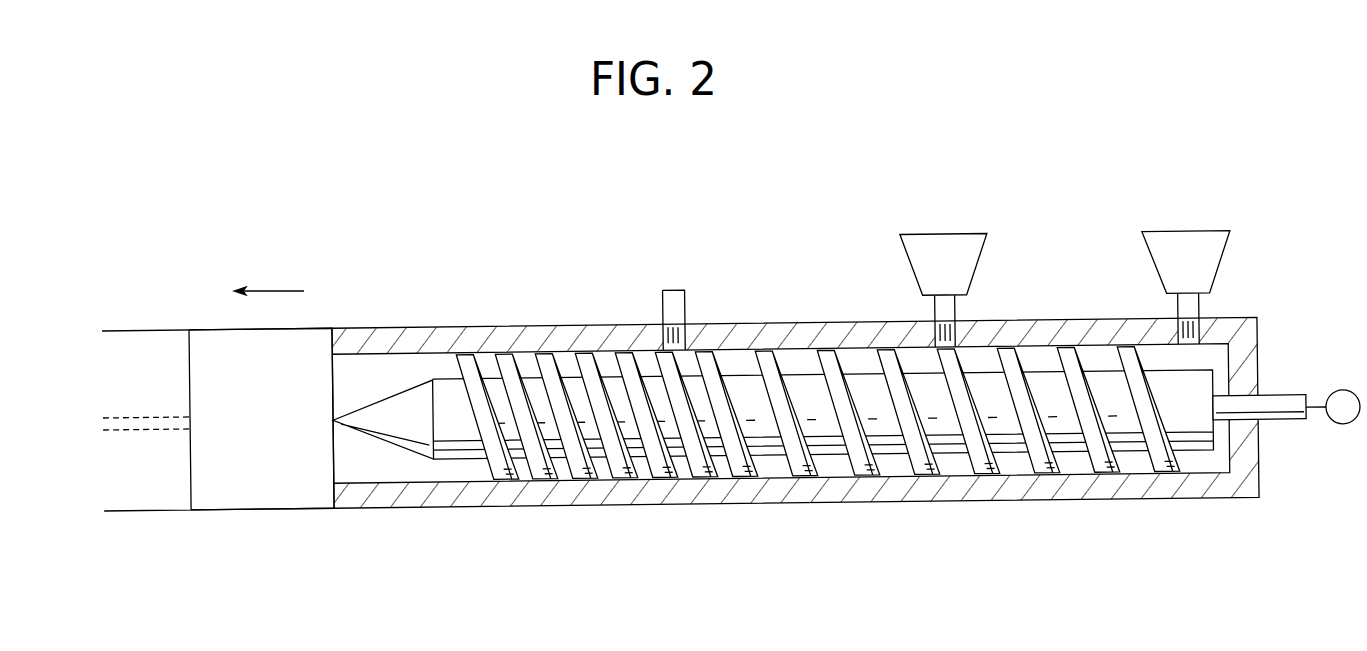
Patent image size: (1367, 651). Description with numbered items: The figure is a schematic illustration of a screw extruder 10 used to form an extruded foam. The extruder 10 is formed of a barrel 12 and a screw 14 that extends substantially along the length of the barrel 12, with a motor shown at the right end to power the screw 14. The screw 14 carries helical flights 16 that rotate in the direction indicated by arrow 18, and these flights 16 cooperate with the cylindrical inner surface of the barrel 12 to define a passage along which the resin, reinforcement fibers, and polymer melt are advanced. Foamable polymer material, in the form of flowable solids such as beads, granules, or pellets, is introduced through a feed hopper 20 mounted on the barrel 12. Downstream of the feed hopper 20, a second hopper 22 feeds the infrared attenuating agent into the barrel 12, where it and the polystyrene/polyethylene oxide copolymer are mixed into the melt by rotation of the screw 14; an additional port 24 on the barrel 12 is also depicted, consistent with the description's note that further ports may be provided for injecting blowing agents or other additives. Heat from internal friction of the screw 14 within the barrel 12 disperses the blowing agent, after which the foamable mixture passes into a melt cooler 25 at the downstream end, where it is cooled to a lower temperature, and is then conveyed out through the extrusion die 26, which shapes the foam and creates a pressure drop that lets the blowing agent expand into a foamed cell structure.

The screw extruder 10 is at (731, 370).
The barrel 12 is at (737, 322).
The screw 14 is at (819, 406).
The helical flights 16 is at (590, 362).
The arrow 18 is at (277, 291).
The feed hopper 20 is at (1180, 230).
The hopper 22 is at (946, 232).
The vent port 24 is at (673, 290).
The melt cooler 25 is at (253, 512).
The extrusion die 26 is at (114, 512).